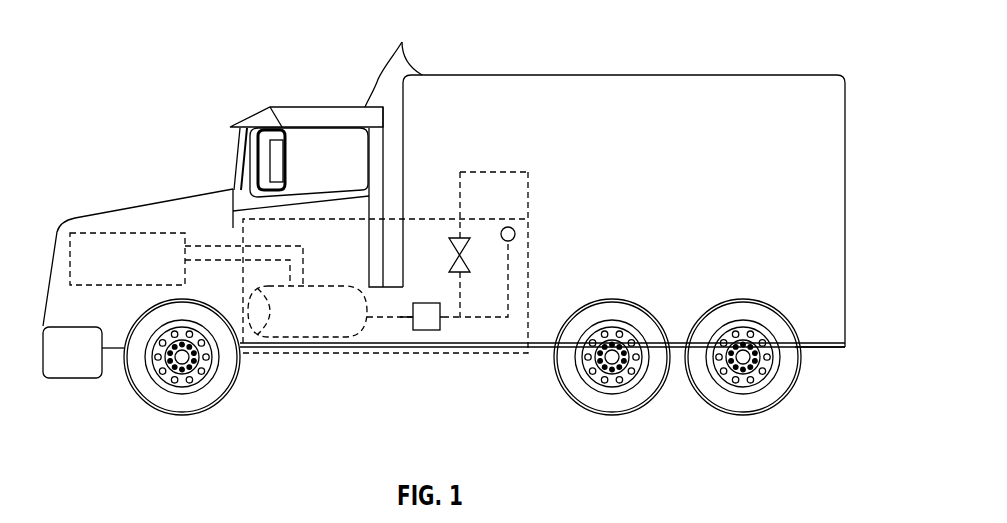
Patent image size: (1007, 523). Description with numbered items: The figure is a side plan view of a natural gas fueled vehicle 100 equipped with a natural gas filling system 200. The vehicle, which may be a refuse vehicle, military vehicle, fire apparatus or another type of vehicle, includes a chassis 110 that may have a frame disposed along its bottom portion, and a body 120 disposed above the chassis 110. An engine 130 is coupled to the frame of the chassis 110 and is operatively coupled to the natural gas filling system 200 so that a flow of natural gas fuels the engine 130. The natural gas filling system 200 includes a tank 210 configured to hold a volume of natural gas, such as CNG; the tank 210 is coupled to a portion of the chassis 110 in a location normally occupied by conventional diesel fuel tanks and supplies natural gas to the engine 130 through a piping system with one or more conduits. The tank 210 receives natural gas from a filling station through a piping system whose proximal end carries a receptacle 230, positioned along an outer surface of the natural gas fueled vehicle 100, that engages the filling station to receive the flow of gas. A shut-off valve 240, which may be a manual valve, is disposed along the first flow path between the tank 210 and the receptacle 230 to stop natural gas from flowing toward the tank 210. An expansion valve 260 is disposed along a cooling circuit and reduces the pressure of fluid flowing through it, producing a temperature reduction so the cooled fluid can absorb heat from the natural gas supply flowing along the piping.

The natural gas fueled vehicle 100 is at (777, 33).
The chassis 110 is at (818, 348).
The body 120 is at (402, 43).
The engine 130 is at (146, 270).
The natural gas filling system 200 is at (335, 370).
The tank 210 is at (326, 322).
The receptacle 230 is at (516, 232).
The shut-off valve 240 is at (425, 330).
The expansion valve 260 is at (455, 237).